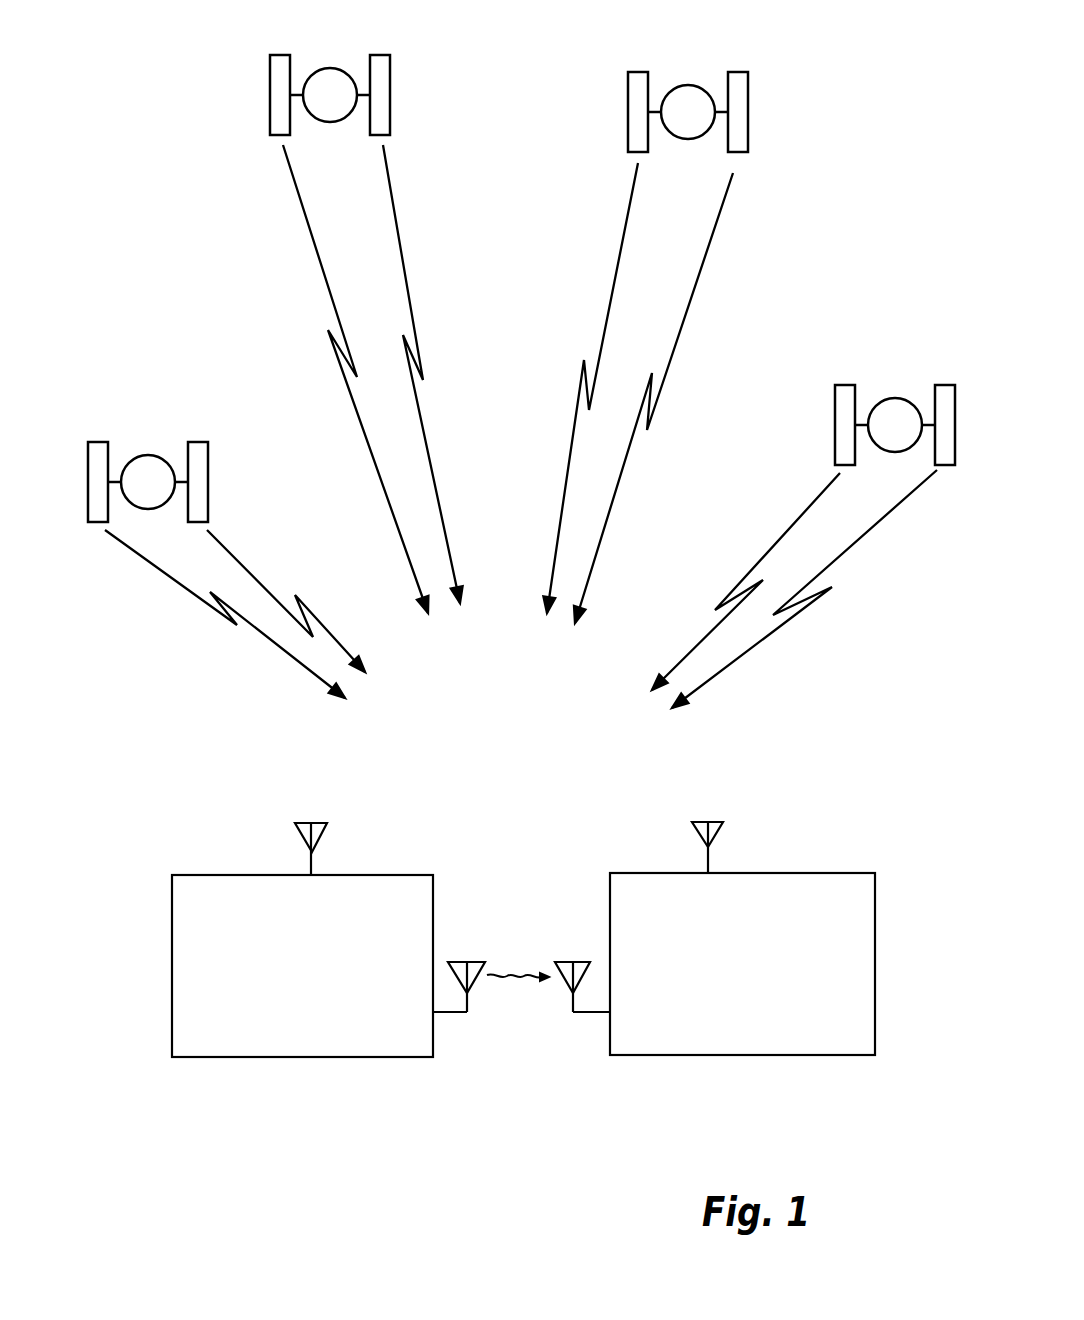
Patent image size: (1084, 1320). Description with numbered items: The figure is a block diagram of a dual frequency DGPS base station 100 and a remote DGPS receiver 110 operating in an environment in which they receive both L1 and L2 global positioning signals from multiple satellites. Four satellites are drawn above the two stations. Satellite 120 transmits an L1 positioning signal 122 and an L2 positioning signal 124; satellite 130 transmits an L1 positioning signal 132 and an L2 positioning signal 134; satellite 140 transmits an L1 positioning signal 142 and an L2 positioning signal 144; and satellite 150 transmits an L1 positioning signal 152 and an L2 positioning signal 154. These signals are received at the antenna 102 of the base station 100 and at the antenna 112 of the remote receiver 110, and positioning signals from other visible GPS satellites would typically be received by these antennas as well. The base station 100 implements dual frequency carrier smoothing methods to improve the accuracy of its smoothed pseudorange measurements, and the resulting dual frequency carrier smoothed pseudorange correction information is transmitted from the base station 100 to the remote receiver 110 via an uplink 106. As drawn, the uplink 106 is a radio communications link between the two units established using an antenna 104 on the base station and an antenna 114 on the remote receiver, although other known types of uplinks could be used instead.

The dual frequency DGPS base station 100 is at (212, 875).
The antenna 102 is at (327, 853).
The antenna 104 is at (452, 1012).
The uplink 106 is at (514, 979).
The remote DGPS receiver 110 is at (787, 873).
The antenna 112 is at (712, 853).
The antenna 114 is at (590, 1012).
The satellite 120 is at (94, 442).
The L1 positioning signal 122 is at (238, 625).
The L2 positioning signal 124 is at (233, 553).
The satellite 130 is at (318, 68).
The L1 positioning signal 132 is at (332, 352).
The L2 positioning signal 134 is at (418, 333).
The satellite 140 is at (685, 85).
The L1 positioning signal 142 is at (556, 538).
The L2 positioning signal 144 is at (661, 392).
The satellite 150 is at (884, 398).
The L1 positioning signal 152 is at (757, 563).
The L2 positioning signal 154 is at (850, 550).